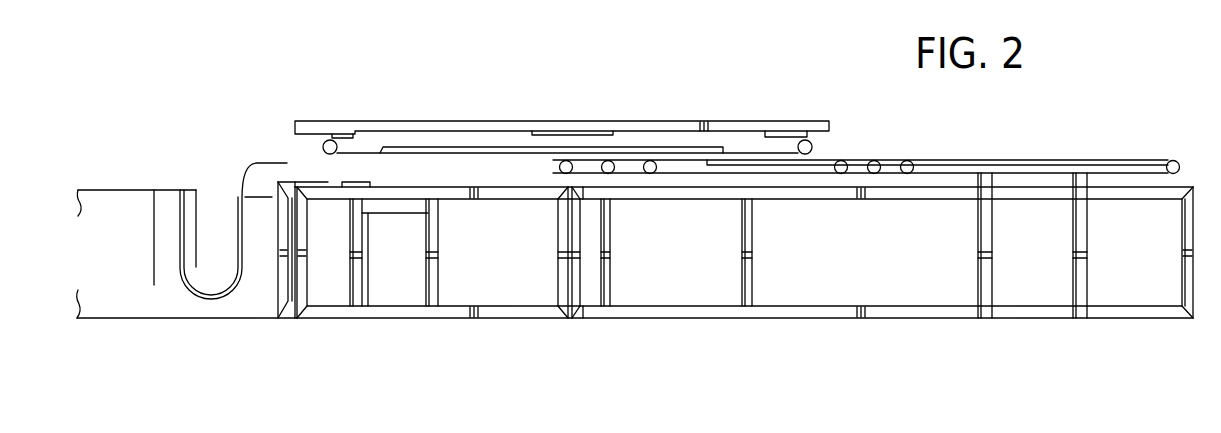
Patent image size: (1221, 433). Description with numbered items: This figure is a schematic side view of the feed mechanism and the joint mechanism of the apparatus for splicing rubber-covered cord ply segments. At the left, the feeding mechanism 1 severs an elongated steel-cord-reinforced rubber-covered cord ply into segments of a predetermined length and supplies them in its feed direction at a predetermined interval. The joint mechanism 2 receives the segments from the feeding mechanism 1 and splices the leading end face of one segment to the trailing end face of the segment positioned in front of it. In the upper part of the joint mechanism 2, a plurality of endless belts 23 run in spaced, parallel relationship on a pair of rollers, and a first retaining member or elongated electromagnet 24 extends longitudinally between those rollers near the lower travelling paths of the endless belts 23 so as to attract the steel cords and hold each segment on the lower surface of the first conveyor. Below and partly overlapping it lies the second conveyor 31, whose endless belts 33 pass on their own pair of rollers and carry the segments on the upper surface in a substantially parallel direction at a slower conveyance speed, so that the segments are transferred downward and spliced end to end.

The feeding mechanism 1 is at (230, 174).
The joint mechanism 2 is at (853, 136).
The endless belts 23 is at (800, 133).
The first retaining member or elongated electromagnet 24 is at (434, 154).
The second conveyor 31 is at (1073, 153).
The endless belts 33 is at (979, 161).